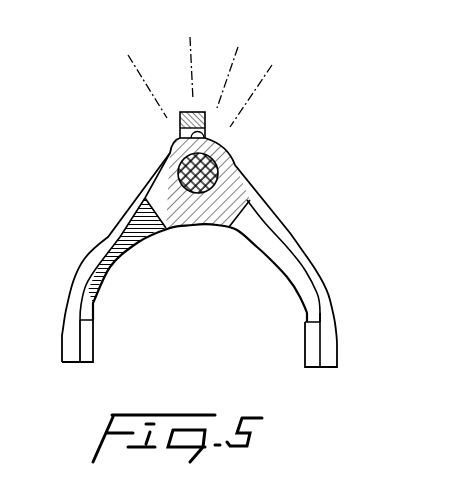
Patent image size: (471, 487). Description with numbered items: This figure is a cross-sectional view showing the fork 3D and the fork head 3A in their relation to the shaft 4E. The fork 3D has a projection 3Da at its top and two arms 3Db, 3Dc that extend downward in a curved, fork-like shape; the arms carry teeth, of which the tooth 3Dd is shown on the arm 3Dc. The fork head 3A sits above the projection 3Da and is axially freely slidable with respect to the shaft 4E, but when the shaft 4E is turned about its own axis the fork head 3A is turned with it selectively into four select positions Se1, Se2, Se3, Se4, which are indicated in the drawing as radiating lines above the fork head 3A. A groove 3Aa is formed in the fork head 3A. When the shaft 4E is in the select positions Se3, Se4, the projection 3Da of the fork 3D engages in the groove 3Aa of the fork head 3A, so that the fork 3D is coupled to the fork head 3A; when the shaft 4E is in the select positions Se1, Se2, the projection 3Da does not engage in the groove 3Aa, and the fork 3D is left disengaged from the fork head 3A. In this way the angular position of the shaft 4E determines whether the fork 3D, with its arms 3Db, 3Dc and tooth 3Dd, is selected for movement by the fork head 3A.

The fork 3D is at (127, 120).
The projection 3Da is at (167, 152).
The arm 3Db is at (287, 223).
The arm 3Dc is at (93, 260).
The tooth 3Dd is at (88, 342).
The fork head 3A is at (185, 111).
The groove 3Aa is at (203, 135).
The shaft 4E is at (228, 163).
The select position Se1 is at (262, 75).
The select position Se2 is at (235, 52).
The select position Se3 is at (188, 45).
The select position Se4 is at (135, 68).